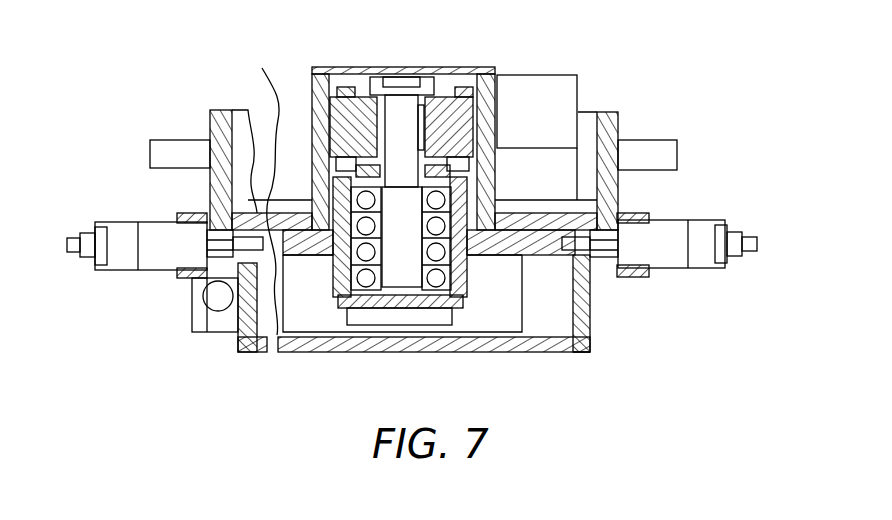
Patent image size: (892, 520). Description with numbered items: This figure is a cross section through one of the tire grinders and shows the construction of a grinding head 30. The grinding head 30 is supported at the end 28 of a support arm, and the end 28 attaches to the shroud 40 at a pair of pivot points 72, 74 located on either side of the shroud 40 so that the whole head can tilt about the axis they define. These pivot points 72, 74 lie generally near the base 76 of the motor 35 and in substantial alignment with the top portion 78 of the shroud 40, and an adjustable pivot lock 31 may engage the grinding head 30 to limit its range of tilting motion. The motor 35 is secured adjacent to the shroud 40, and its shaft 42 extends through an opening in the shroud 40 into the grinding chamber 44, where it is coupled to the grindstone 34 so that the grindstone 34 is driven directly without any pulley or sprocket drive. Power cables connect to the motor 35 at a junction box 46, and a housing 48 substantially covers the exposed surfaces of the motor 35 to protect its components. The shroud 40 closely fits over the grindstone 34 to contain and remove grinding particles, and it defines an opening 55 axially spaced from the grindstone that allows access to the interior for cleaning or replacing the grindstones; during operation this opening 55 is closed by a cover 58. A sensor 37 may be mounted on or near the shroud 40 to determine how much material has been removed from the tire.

The end of arm 28 is at (218, 125).
The grinding head 30 is at (528, 357).
The adjustable pivot lock 31 is at (82, 237).
The grindstone 34 is at (508, 296).
The motor 35 is at (443, 123).
The sensor 37 is at (210, 296).
The shroud 40 is at (582, 325).
The shaft 42 is at (366, 312).
The grinding chamber 44 is at (247, 318).
The junction box 46 is at (548, 92).
The housing 48 is at (345, 68).
The opening 55 is at (412, 350).
The cover 58 is at (582, 355).
The pivot point 72 is at (230, 247).
The pivot point 74 is at (607, 235).
The base of motor 76 is at (253, 187).
The top portion of shroud 78 is at (255, 205).